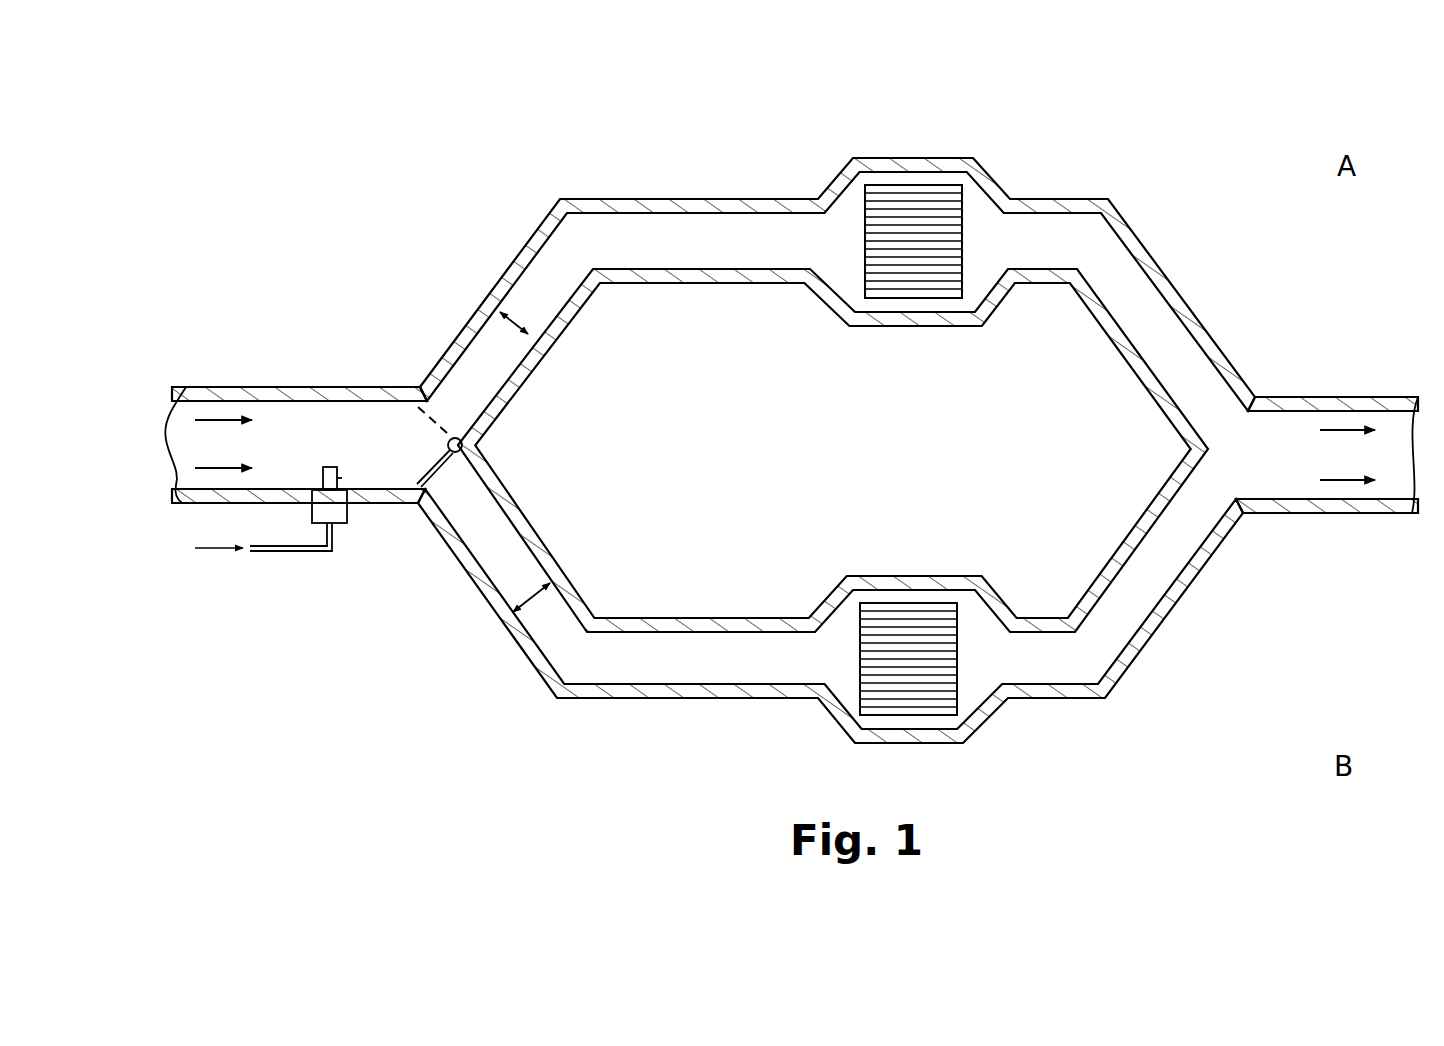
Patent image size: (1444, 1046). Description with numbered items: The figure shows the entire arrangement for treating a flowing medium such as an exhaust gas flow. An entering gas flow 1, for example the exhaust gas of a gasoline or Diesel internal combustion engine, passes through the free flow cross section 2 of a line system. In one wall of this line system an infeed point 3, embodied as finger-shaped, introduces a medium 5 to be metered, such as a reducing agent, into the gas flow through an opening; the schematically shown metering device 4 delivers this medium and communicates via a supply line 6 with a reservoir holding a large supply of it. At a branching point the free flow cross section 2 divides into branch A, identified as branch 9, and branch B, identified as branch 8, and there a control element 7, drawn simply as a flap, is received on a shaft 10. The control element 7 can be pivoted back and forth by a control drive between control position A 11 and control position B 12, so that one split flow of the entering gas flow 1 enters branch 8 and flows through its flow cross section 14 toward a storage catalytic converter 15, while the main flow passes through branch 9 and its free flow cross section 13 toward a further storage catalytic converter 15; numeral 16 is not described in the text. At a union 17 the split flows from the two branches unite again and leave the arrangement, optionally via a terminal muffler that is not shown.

The entering gas flow 1 is at (186, 387).
The free flow cross section 2 is at (292, 427).
The infeed point 3 is at (328, 458).
The metering device 4 is at (340, 523).
The medium 5 is at (340, 492).
The supply line 6 is at (287, 555).
The control element 7 is at (460, 482).
The branch B 8 is at (500, 550).
The branch A 9 is at (545, 270).
The shaft 10 is at (467, 443).
The control position A 11 is at (414, 376).
The control position B 12 is at (442, 484).
The free flow cross section of branch A 13 is at (514, 322).
The flow cross section of branch B 14 is at (540, 597).
The storage catalytic converter 15 is at (903, 697).
The upper catalytic converter 16 is at (912, 205).
The union 17 is at (1290, 453).